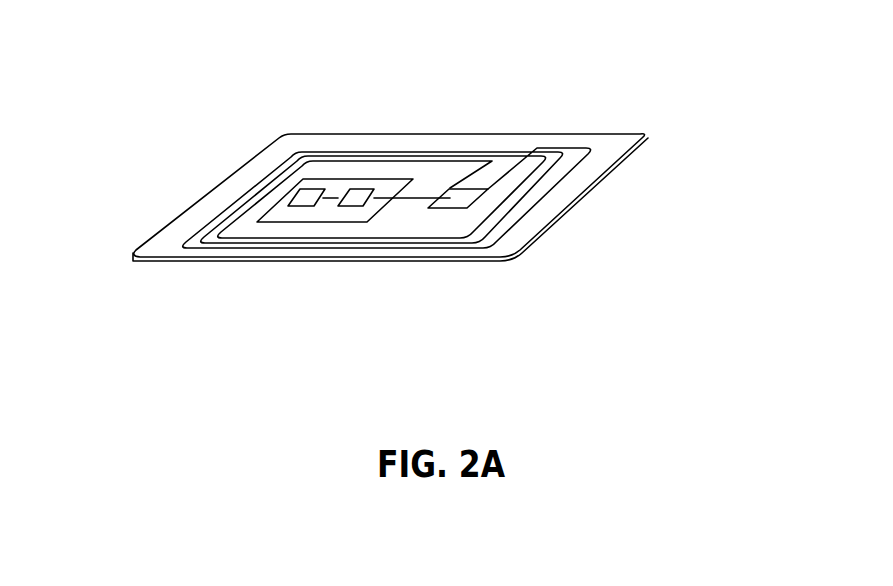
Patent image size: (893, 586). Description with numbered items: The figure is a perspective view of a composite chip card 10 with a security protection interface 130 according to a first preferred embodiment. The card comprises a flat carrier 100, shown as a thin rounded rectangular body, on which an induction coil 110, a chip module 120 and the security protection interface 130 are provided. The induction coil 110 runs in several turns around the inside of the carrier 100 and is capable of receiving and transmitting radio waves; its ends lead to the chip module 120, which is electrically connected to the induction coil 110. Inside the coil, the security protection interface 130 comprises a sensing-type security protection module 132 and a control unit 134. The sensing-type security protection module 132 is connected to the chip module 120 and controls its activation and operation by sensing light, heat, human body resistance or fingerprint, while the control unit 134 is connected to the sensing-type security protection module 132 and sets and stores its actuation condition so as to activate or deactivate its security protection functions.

The composite chip card 10 is at (670, 72).
The carrier 100 is at (233, 188).
The induction coil 110 is at (533, 200).
The chip module 120 is at (446, 208).
The security protection interface 130 is at (365, 184).
The sensing-type security protection module 132 is at (344, 208).
The control unit 134 is at (291, 208).